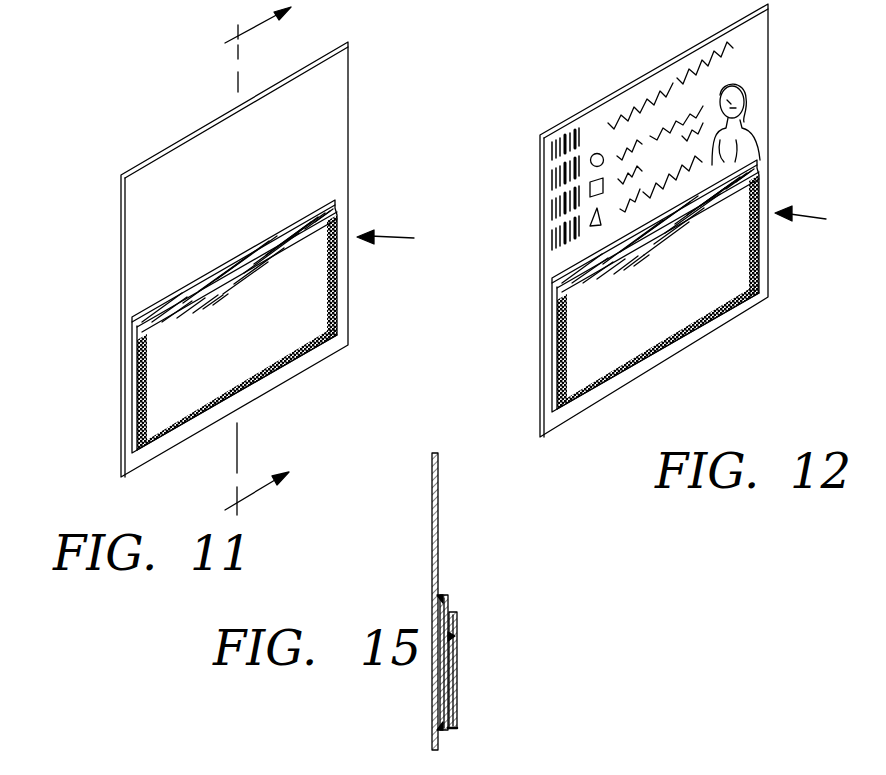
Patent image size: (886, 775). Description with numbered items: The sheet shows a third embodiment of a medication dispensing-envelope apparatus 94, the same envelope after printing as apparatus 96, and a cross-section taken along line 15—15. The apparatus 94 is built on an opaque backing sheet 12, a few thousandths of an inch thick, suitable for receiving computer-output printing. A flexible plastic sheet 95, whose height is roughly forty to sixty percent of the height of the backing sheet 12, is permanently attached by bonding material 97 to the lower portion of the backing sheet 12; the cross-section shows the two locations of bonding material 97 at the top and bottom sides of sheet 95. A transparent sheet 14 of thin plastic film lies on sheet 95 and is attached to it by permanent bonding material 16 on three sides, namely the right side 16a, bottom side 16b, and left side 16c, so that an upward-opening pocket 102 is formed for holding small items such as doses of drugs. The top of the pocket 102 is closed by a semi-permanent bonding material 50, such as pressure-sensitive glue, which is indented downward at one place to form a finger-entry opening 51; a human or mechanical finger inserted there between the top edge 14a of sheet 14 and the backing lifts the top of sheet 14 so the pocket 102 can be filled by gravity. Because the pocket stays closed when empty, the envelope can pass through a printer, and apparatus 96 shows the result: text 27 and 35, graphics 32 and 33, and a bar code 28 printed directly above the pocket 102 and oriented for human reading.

In FIG. 11, the backing sheet 12 is at (323, 137).
In FIG. 12, the backing sheet 12 is at (755, 80).
In FIG. 15, the backing sheet 12 is at (438, 490).
In FIG. 11, the transparent sheet 14 is at (177, 387).
In FIG. 12, the transparent sheet 14 is at (605, 340).
In FIG. 15, the transparent sheet 14 is at (457, 660).
In FIG. 11, the top edge 14a is at (183, 300).
In FIG. 11, the section line 15— 15 is at (277, 261).
In FIG. 11, the permanent bonding material 16 is at (337, 291).
In FIG. 11, the right side bonding 16a is at (340, 313).
In FIG. 11, the bottom side bonding 16b is at (307, 357).
In FIG. 15, the bottom side bonding 16b is at (457, 727).
In FIG. 11, the left side bonding 16c is at (147, 427).
In FIG. 12, the printed text 27 is at (688, 135).
In FIG. 12, the bar code 28 is at (552, 160).
In FIG. 12, the graphics 32 is at (596, 153).
In FIG. 12, the graphics 33 is at (738, 125).
In FIG. 12, the printed text 35 is at (665, 90).
In FIG. 11, the semi-permanent bonding material 50 is at (303, 237).
In FIG. 15, the semi-permanent bonding material 50 is at (452, 640).
In FIG. 11, the finger-entry opening 51 is at (235, 287).
In FIG. 15, the finger-entry opening 51 is at (448, 615).
In FIG. 11, the dispensing-envelope apparatus 94 is at (402, 240).
In FIG. 11, the flexible sheet 95 is at (272, 248).
In FIG. 12, the flexible sheet 95 is at (583, 270).
In FIG. 15, the flexible sheet 95 is at (446, 597).
In FIG. 12, the apparatus 96 is at (817, 221).
In FIG. 15, the bonding material 97 is at (440, 597).
In FIG. 11, the pocket 102 is at (217, 357).
In FIG. 12, the pocket 102 is at (668, 307).
In FIG. 15, the pocket 102 is at (453, 700).